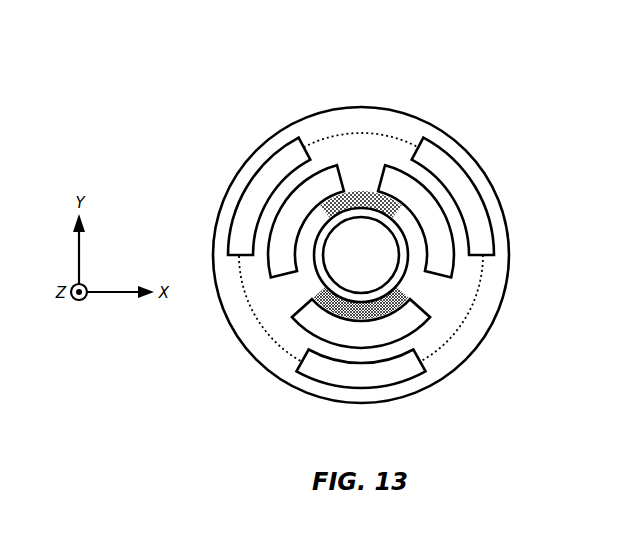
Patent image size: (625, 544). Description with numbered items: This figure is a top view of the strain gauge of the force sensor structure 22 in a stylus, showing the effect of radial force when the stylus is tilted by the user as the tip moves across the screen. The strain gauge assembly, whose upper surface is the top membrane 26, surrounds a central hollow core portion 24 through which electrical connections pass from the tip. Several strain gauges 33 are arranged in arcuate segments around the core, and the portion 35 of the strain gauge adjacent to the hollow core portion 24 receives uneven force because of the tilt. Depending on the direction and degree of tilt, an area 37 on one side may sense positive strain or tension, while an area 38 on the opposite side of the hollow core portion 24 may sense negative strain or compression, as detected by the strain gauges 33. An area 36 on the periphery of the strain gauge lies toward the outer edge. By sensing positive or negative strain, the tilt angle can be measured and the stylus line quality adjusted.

The force sensor structure 22 is at (457, 104).
The hollow core portion 24 is at (402, 265).
The top membrane 26 is at (478, 154).
The strain gauges 33 is at (257, 188).
The portion of strain gauge adjacent to hollow core portion 35 is at (404, 296).
The area on the periphery of strain gauge 36 is at (470, 332).
The area sensing positive strain or tension 37 is at (361, 193).
The area sensing negative strain or compression 38 is at (362, 313).